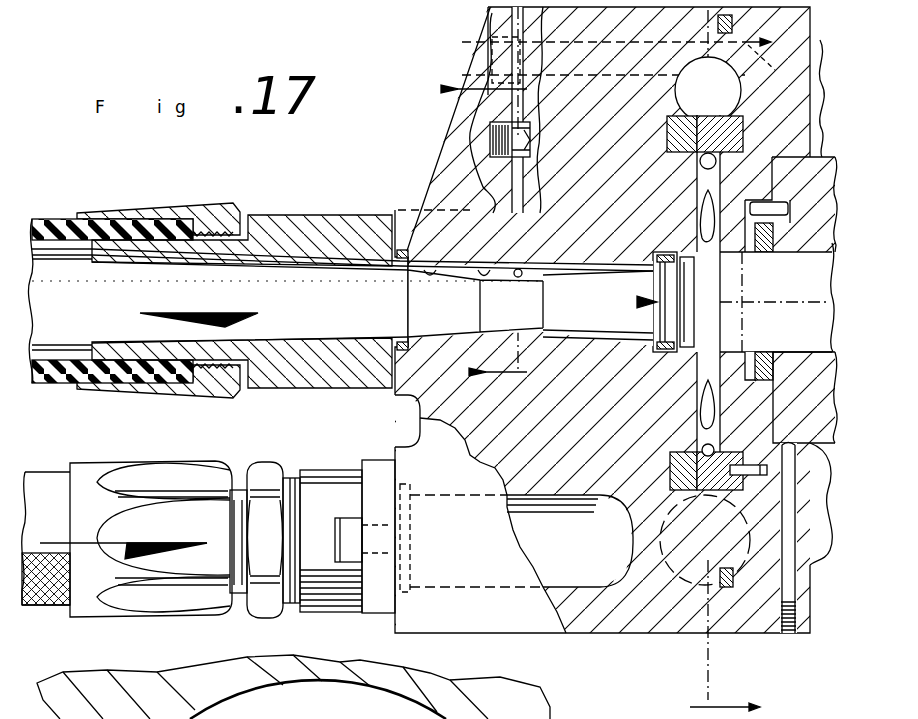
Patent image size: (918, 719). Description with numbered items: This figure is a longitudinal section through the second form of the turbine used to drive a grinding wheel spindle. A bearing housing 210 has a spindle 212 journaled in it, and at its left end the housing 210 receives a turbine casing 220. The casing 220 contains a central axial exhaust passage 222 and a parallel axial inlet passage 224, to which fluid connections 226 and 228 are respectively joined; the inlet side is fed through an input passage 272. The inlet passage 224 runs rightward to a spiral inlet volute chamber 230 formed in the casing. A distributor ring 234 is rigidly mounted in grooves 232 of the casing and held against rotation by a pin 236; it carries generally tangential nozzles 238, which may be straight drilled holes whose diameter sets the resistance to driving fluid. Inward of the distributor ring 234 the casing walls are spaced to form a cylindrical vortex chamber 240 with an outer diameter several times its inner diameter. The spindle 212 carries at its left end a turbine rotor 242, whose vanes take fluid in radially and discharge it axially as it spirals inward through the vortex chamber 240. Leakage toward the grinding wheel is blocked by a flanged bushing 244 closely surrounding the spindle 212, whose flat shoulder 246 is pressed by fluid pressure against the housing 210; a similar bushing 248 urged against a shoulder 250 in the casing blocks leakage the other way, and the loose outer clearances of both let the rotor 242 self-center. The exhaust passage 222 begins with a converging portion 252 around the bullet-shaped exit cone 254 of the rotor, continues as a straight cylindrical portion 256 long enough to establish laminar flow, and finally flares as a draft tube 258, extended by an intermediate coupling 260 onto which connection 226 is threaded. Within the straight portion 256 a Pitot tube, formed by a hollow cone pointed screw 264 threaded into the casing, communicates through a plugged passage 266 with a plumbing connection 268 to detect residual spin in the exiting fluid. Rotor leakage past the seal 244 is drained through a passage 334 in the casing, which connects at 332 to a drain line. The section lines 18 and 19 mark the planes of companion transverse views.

The turbine casing 220 is at (602, 634).
The axial inlet passage 224 is at (572, 549).
The plugged passage 266 is at (520, 184).
The plumbing connection 268 is at (492, 131).
The section line 19- 19 is at (466, 196).
The section line 18- 18 is at (743, 364).
The inlet volute chamber 230 is at (727, 102).
The vortex chamber 240 is at (697, 242).
The nozzles 238 is at (703, 205).
The grooves 232 is at (743, 130).
The distributor ring 234 is at (680, 140).
The pin 236 is at (737, 476).
The bearing housing 210 is at (812, 190).
The spindle 212 is at (817, 290).
The bushing 248 is at (657, 267).
The turbine rotor 242 is at (683, 315).
The flat shoulder 246 is at (775, 358).
The flanged bushing 244 is at (814, 362).
The connection point 332 is at (786, 636).
The drain passage 334 is at (729, 588).
The cone pointed screw 264 is at (515, 280).
The axial exhaust passage 222 is at (604, 305).
The shoulder 250 is at (645, 333).
The converging portion 252 is at (580, 268).
The exit cone 254 is at (637, 301).
The draft tube 258 is at (430, 270).
The cylindrical portion 256 is at (483, 272).
The fluid connection 226 is at (213, 205).
The intermediate coupling 260 is at (284, 222).
The input passage 272 is at (35, 470).
The fluid connection 228 is at (232, 470).